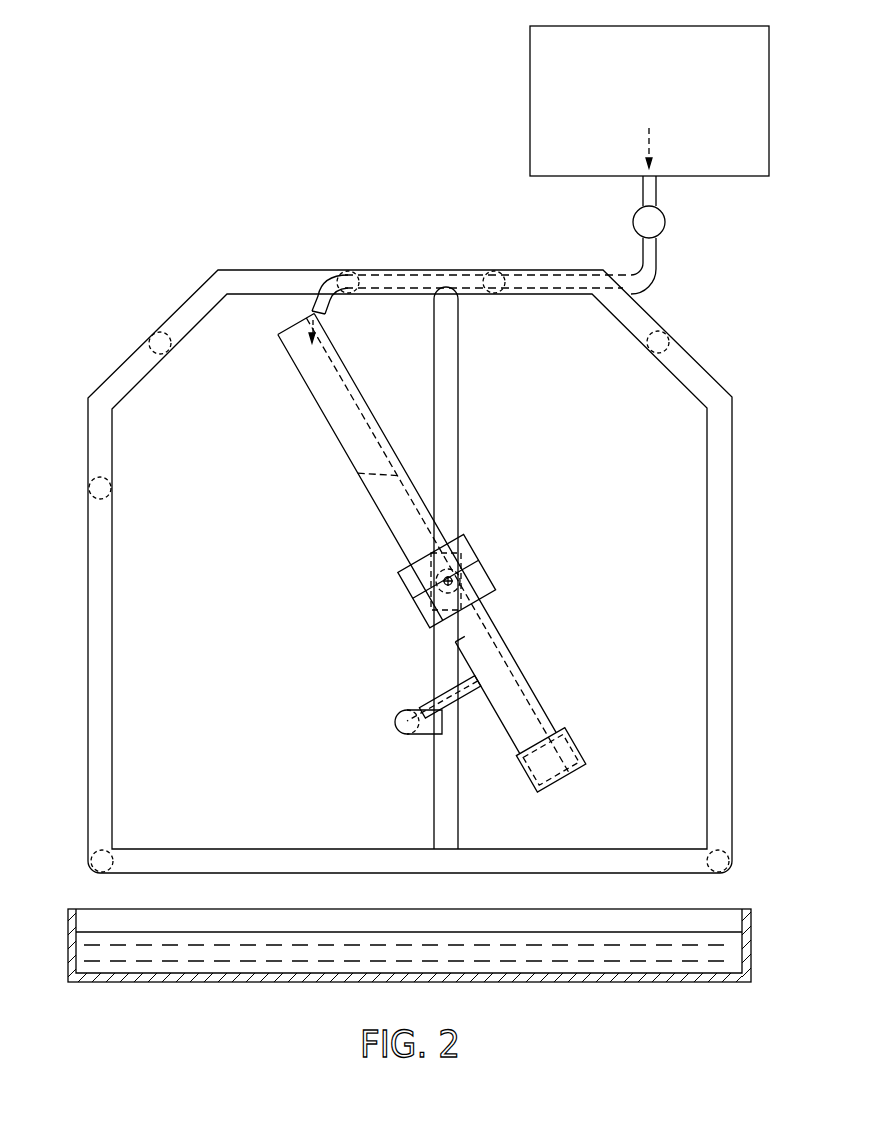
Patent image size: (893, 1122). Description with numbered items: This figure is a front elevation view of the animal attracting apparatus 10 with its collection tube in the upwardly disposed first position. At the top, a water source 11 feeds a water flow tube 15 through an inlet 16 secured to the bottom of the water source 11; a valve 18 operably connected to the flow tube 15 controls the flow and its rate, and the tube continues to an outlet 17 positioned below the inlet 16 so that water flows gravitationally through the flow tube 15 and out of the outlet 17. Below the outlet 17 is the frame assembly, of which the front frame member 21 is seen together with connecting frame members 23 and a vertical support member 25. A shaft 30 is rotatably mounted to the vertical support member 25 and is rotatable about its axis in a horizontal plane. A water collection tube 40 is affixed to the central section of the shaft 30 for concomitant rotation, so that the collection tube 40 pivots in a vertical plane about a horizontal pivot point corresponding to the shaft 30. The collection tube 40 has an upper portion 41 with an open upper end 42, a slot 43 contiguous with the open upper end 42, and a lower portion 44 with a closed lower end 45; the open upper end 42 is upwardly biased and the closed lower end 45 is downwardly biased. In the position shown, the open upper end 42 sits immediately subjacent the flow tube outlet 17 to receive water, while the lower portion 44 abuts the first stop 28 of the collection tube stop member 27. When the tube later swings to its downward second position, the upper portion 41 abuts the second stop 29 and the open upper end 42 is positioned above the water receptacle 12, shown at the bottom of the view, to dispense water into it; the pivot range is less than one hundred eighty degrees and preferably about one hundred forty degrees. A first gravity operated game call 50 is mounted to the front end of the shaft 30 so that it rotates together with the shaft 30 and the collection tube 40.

The animal attracting apparatus 10 is at (176, 125).
The water source 11 is at (638, 94).
The water receptacle 12 is at (69, 904).
The water flow tube 15 is at (650, 277).
The inlet 16 is at (655, 185).
The outlet 17 is at (311, 306).
The valve 18 is at (666, 222).
The front frame member 21 is at (181, 280).
The connecting frame members 23 is at (152, 337).
The vertical support members 25 is at (450, 348).
The collection tube stop member 27 is at (416, 707).
The first stop 28 is at (478, 693).
The second stop 29 is at (396, 727).
The shaft 30 is at (461, 581).
The water collection tube 40 is at (405, 575).
The upper portion 41 is at (312, 363).
The open upper end 42 is at (305, 318).
The slot 43 is at (325, 322).
The lower portion 44 is at (546, 715).
The closed lower end 45 is at (560, 783).
The first gravity operated game call 50 is at (474, 561).